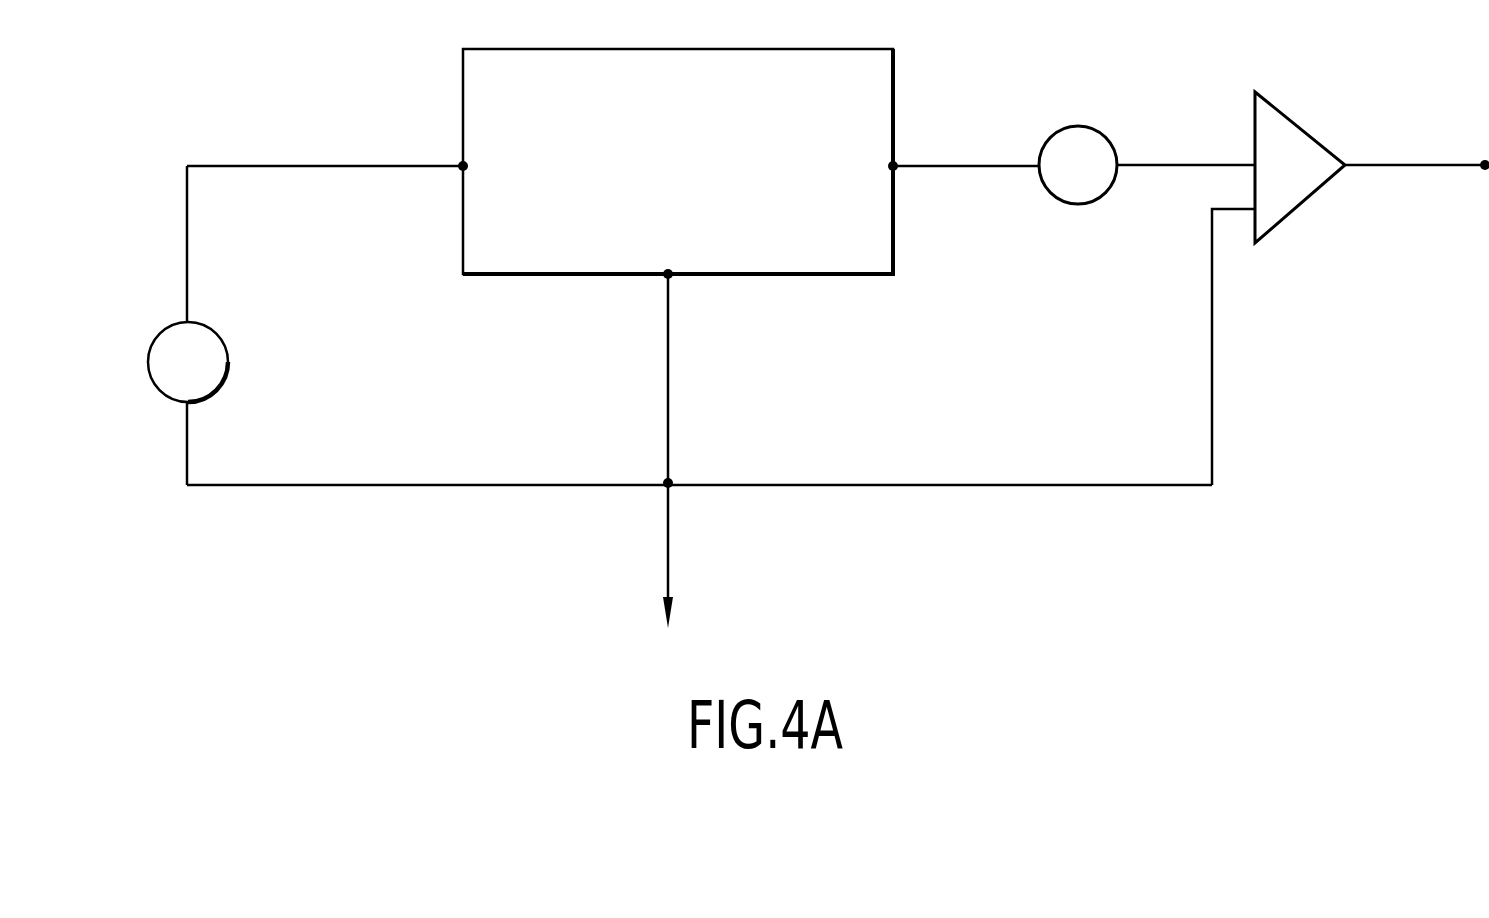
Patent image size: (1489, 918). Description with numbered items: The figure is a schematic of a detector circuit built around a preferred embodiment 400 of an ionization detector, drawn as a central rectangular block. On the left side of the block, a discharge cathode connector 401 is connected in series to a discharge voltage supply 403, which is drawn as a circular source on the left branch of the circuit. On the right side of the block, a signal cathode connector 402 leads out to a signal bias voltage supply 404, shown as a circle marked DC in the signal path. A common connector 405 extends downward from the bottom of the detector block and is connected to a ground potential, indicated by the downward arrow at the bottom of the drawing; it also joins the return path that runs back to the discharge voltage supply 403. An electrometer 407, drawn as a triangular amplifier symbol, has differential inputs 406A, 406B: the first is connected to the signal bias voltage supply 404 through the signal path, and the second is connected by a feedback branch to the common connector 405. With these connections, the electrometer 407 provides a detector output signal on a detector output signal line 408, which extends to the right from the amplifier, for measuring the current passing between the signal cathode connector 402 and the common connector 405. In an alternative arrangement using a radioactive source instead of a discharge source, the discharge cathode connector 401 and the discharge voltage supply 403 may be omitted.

The preferred embodiment of ionization detector 400 is at (708, 140).
The discharge cathode connector 401 is at (450, 148).
The signal cathode connector 402 is at (910, 145).
The discharge voltage supply 403 is at (228, 368).
The signal bias voltage supply 404 is at (1073, 205).
The common connector 405 is at (680, 285).
The differential input 406A is at (1160, 165).
The differential input 406B is at (1227, 233).
The electrometer 407 is at (1307, 197).
The detector output signal line 408 is at (1410, 165).